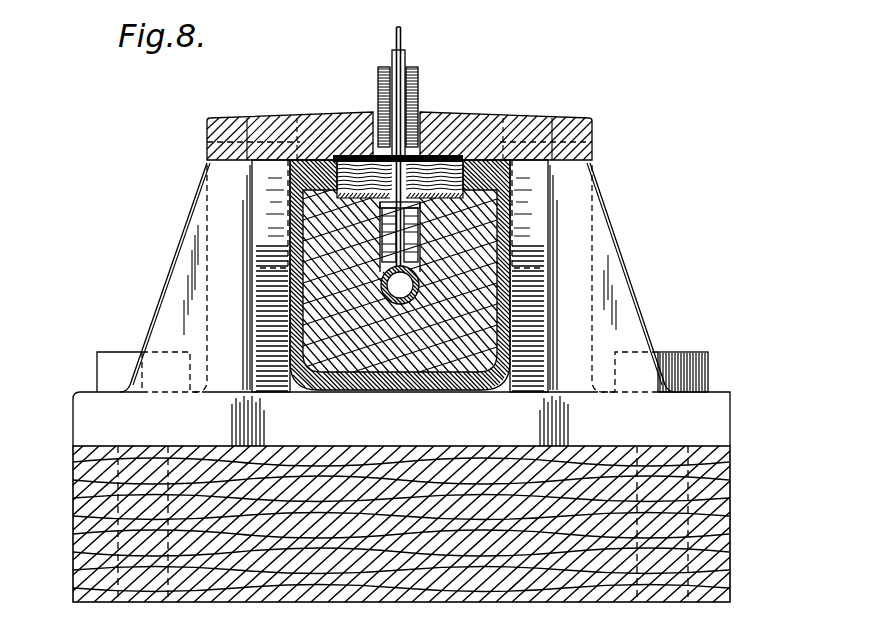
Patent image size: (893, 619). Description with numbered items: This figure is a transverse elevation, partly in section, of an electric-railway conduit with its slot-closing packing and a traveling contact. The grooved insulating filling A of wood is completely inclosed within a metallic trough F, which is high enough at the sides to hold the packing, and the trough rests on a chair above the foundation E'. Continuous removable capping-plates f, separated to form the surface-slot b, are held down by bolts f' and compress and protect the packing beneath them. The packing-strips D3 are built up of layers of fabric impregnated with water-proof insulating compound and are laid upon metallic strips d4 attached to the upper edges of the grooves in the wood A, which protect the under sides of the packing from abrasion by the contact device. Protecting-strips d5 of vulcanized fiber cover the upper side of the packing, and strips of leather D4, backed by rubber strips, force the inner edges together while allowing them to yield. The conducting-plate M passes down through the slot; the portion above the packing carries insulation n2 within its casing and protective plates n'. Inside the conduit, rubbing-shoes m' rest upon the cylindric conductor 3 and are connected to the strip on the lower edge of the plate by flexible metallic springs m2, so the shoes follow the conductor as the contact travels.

The conducting-plate M is at (402, 38).
The insulation n2 is at (408, 63).
The bushing blocks n' is at (393, 107).
The surface-slot b is at (375, 108).
The protecting-strips d5 is at (346, 156).
The packing-strips D3 is at (462, 116).
The bolts f' is at (402, 125).
The capping-plates f is at (399, 139).
The strips of leather D4 is at (497, 175).
The metallic strips d4 is at (548, 232).
The flexible metallic springs m2 is at (438, 232).
The rubbing-shoes m' is at (397, 242).
The insulating filling or lining A is at (400, 281).
The cylindric conductor 3 is at (400, 285).
The metallic trough F is at (418, 394).
The foundation E' is at (401, 524).